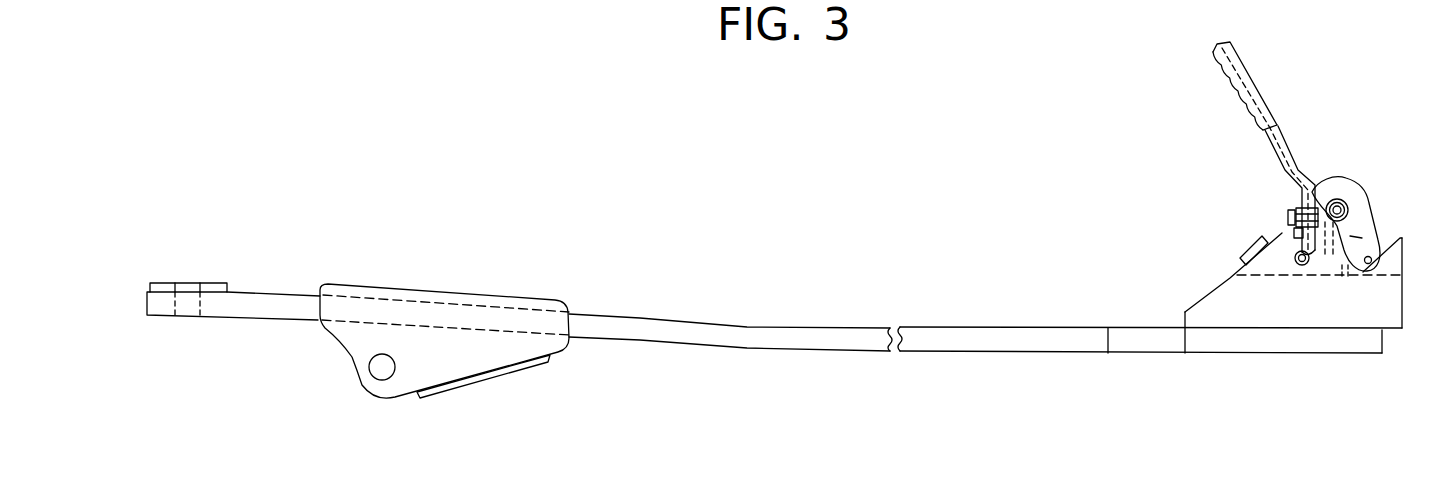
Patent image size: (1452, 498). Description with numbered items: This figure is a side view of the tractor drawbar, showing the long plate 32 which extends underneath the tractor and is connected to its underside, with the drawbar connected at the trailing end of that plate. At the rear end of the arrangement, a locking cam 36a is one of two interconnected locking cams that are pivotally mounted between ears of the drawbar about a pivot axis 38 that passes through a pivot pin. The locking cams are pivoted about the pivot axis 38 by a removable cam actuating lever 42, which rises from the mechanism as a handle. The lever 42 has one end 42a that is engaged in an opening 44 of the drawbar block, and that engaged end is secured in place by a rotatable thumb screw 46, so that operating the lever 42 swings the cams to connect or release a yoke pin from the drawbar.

The plate 32 is at (836, 333).
The cam actuating lever 42 is at (1290, 128).
The end of lever 42a is at (1296, 253).
The pivot axis 38 is at (1353, 183).
The locking cam 36a is at (1360, 237).
The opening 44 is at (1290, 232).
The thumb screw 46 is at (1288, 210).